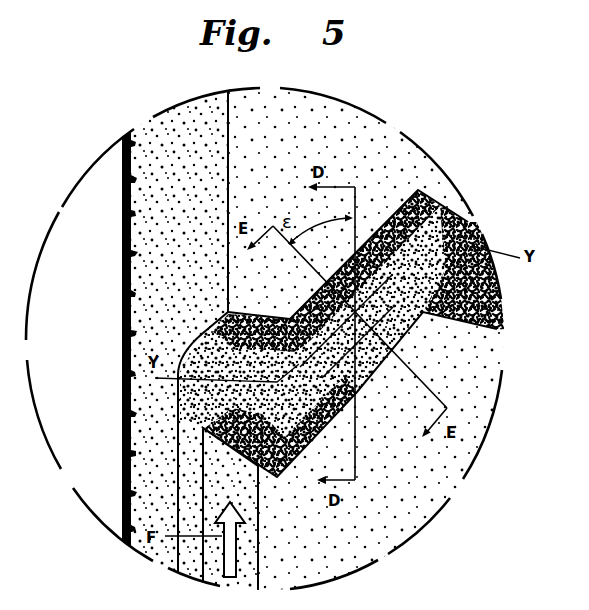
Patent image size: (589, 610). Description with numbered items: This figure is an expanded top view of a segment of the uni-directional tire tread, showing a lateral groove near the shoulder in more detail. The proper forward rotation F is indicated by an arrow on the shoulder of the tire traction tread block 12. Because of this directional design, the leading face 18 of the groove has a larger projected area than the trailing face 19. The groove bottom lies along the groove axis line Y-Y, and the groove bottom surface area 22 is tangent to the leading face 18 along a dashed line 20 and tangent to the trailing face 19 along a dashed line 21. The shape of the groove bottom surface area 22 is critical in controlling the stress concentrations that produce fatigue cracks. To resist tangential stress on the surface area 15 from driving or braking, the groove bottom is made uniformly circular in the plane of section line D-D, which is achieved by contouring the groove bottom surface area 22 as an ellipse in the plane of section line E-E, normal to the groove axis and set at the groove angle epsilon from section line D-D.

The tire traction tread block 12 is at (200, 188).
The surface area 15 is at (281, 128).
The leading face 18 is at (362, 338).
The trailing face 19 is at (345, 308).
The dashed line 20 is at (378, 312).
The dashed line 21 is at (402, 203).
The groove bottom surface area 22 is at (315, 362).